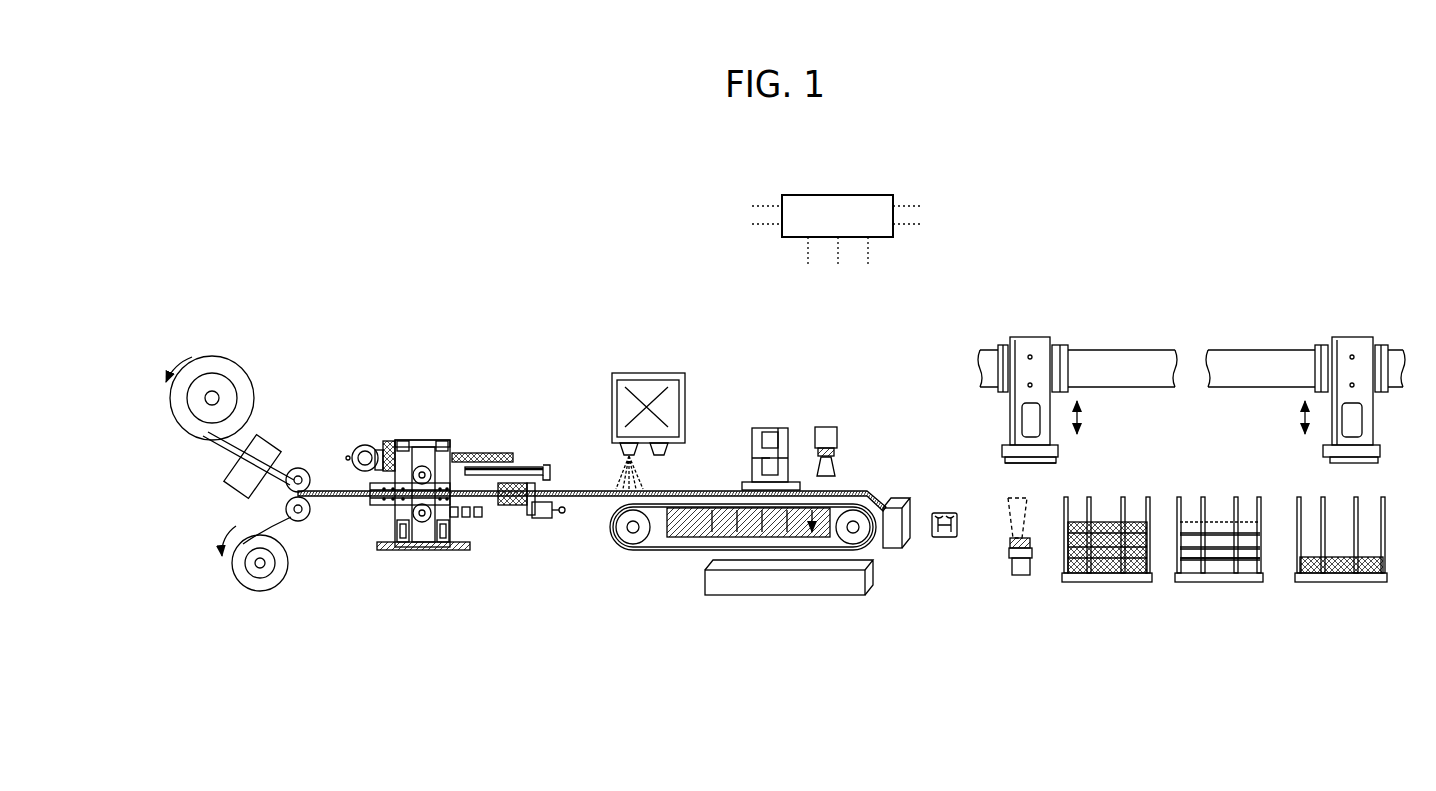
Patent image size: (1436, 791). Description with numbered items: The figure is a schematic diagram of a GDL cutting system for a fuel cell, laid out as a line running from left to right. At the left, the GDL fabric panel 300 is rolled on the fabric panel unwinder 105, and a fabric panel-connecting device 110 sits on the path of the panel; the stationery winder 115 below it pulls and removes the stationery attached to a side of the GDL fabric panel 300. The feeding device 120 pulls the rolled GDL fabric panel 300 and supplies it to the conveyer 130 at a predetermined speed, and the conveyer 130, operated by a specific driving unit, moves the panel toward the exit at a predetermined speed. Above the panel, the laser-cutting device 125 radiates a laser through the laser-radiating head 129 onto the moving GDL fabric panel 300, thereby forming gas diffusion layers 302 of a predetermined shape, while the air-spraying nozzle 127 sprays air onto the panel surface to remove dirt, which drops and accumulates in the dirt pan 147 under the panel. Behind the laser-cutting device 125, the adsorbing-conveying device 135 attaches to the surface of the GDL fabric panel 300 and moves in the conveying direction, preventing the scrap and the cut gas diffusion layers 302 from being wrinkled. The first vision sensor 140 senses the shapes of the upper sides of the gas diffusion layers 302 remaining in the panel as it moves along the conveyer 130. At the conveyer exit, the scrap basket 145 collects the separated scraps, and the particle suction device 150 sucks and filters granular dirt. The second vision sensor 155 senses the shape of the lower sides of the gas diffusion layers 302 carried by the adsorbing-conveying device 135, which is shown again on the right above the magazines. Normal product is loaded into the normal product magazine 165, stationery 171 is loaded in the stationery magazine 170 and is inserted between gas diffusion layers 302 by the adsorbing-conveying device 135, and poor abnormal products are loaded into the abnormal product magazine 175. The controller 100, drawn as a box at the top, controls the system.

The controller 100 is at (876, 195).
The fabric panel unwinder 105 is at (229, 355).
The fabric panel-connecting device 110 is at (228, 479).
The stationery winder 115 is at (259, 600).
The feeding device 120 is at (416, 432).
The laser-cutting device 125 is at (648, 364).
The air-spraying nozzle 127 is at (618, 450).
The laser-radiating head 129 is at (670, 450).
The conveyer 130 is at (680, 524).
The adsorbing-conveying device 135 is at (779, 421).
The first vision sensor 140 is at (831, 421).
The scrap basket 145 is at (901, 497).
The dirt pan 147 is at (809, 597).
The particle suction device 150 is at (942, 542).
The second vision sensor 155 is at (1015, 582).
The normal product magazine 165 is at (1115, 590).
The stationery magazine 170 is at (1217, 590).
The stationery 171 is at (1188, 565).
The abnormal product magazine 175 is at (1341, 590).
The GDL fabric panel 300 is at (338, 497).
The gas diffusion layer 302 is at (1062, 463).